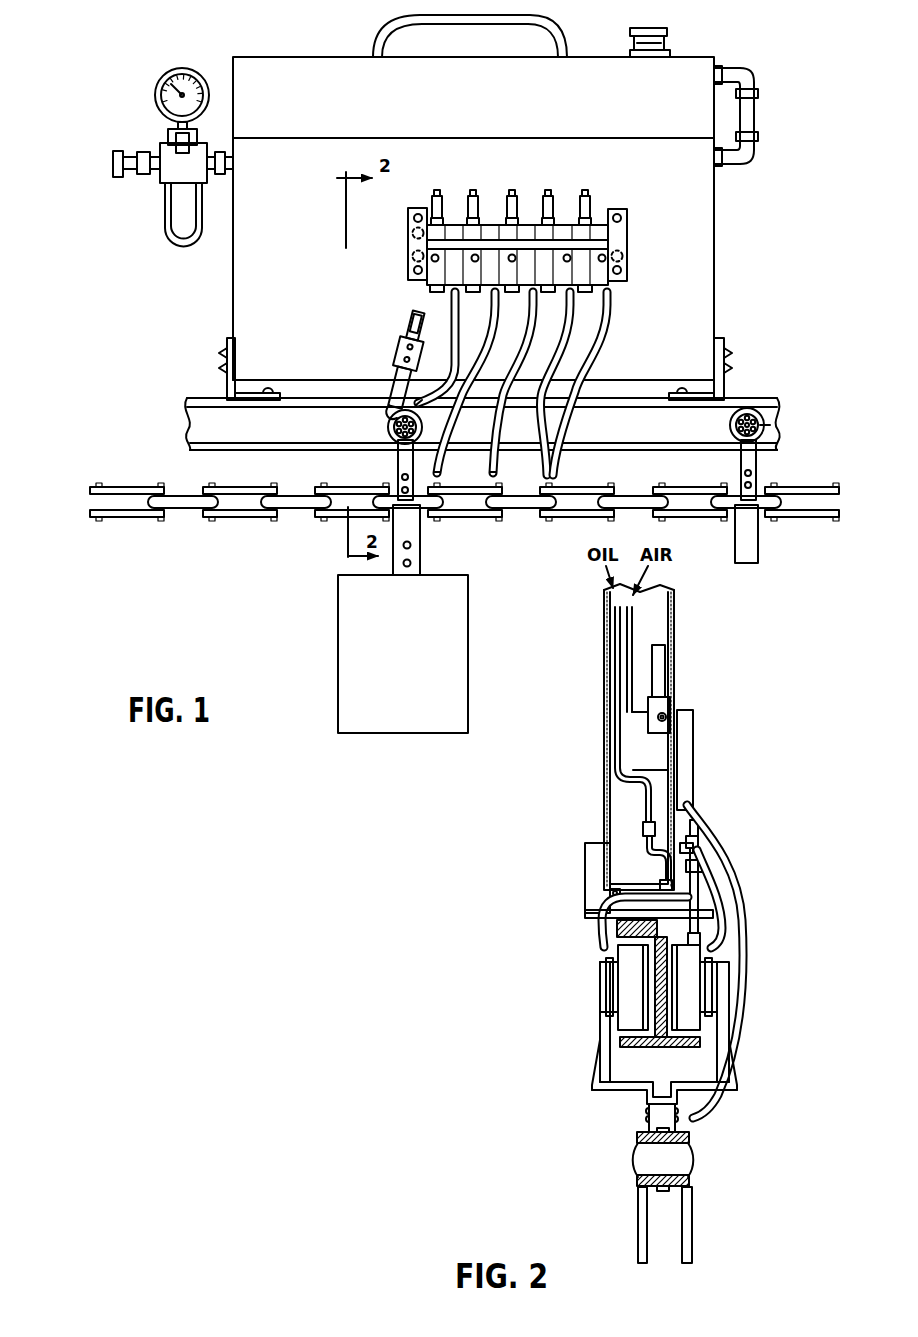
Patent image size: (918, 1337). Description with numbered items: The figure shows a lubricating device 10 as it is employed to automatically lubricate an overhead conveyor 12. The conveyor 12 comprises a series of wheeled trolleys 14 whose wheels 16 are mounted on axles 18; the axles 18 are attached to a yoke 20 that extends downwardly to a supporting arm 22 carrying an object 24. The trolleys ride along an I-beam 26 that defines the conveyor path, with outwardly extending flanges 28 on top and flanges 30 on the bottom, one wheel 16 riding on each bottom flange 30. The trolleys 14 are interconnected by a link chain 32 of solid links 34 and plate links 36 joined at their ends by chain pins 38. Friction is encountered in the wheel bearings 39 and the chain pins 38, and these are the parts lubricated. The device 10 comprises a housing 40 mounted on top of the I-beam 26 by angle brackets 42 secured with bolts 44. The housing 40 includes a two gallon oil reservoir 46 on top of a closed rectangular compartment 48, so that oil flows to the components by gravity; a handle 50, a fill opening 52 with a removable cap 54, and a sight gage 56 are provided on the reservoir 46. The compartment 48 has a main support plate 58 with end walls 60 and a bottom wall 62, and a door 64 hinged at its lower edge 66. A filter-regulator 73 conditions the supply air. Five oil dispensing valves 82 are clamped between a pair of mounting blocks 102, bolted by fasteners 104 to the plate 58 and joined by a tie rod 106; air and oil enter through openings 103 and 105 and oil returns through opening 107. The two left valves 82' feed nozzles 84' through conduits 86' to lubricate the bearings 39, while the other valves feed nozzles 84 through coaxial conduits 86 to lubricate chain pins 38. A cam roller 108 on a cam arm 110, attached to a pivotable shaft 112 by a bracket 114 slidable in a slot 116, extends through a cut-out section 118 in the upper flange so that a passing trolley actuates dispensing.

In FIG. 1, the lubricating device 10 is at (765, 166).
In FIG. 1, the overhead conveyor 12 is at (464, 527).
In FIG. 1, the wheeled trolley 14 is at (575, 471).
In FIG. 2, the wheeled trolley 14 is at (654, 1024).
In FIG. 1, the wheel 16 is at (392, 431).
In FIG. 2, the wheel 16 is at (630, 975).
In FIG. 1, the axle 18 is at (775, 430).
In FIG. 2, the axle 18 is at (600, 991).
In FIG. 1, the yoke 20 is at (420, 440).
In FIG. 2, the yoke 20 is at (598, 1066).
In FIG. 1, the supporting arm 22 is at (420, 536).
In FIG. 2, the supporting arm 22 is at (692, 1212).
In FIG. 1, the object 24 is at (354, 727).
In FIG. 1, the I-beam 26 is at (190, 426).
In FIG. 1, the top flange 28 is at (200, 403).
In FIG. 2, the top flange 28 is at (620, 927).
In FIG. 1, the bottom flange 30 is at (196, 449).
In FIG. 2, the bottom flange 30 is at (672, 1048).
In FIG. 1, the link chain 32 is at (150, 521).
In FIG. 1, the solid link 34 is at (196, 506).
In FIG. 2, the solid link 34 is at (686, 1159).
In FIG. 1, the plate link 36 is at (250, 518).
In FIG. 2, the plate link 36 is at (640, 1136).
In FIG. 1, the chain pin 38 is at (214, 486).
In FIG. 1, the bearing 39 is at (418, 424).
In FIG. 1, the housing 40 is at (228, 289).
In FIG. 1, the angle bracket 42 is at (228, 343).
In FIG. 1, the bolt 44 is at (220, 353).
In FIG. 1, the oil reservoir 46 is at (295, 76).
In FIG. 1, the closed rectangular compartment 48 is at (245, 264).
In FIG. 1, the handle 50 is at (556, 28).
In FIG. 1, the fill opening 52 is at (667, 45).
In FIG. 1, the removable cap 54 is at (658, 28).
In FIG. 1, the sight gage 56 is at (756, 101).
In FIG. 1, the main support plate 58 is at (704, 246).
In FIG. 2, the main support plate 58 is at (677, 657).
In FIG. 1, the end wall 60 is at (232, 318).
In FIG. 2, the bottom wall 62 is at (628, 880).
In FIG. 2, the door 64 is at (606, 672).
In FIG. 2, the lower edge 66 is at (608, 893).
In FIG. 1, the filter-regulator 73 is at (163, 207).
In FIG. 1, the oil dispensing valve 82 is at (548, 186).
In FIG. 1, the oil dispensing valve 82' is at (455, 188).
In FIG. 1, the nozzle 84 is at (480, 467).
In FIG. 2, the nozzle 84 is at (721, 971).
In FIG. 1, the outlet nozzle 84' is at (435, 377).
In FIG. 2, the outlet nozzle 84' is at (664, 907).
In FIG. 1, the conduit 86 is at (569, 383).
In FIG. 1, the outlet conduit 86' is at (456, 382).
In FIG. 1, the mounting block 102 is at (418, 245).
In FIG. 1, the opening 103 is at (416, 233).
In FIG. 1, the fastener 104 is at (418, 218).
In FIG. 1, the opening 105 is at (416, 256).
In FIG. 1, the tie rod 106 is at (590, 246).
In FIG. 1, the opening 107 is at (624, 256).
In FIG. 1, the cam roller 108 is at (386, 412).
In FIG. 2, the cam roller 108 is at (692, 931).
In FIG. 1, the cam arm 110 is at (410, 318).
In FIG. 2, the cam arm 110 is at (700, 899).
In FIG. 2, the pivotable shaft 112 is at (700, 876).
In FIG. 1, the bracket 114 is at (398, 352).
In FIG. 2, the bracket 114 is at (706, 856).
In FIG. 1, the slot 116 is at (411, 335).
In FIG. 1, the cut-out section 118 is at (362, 361).